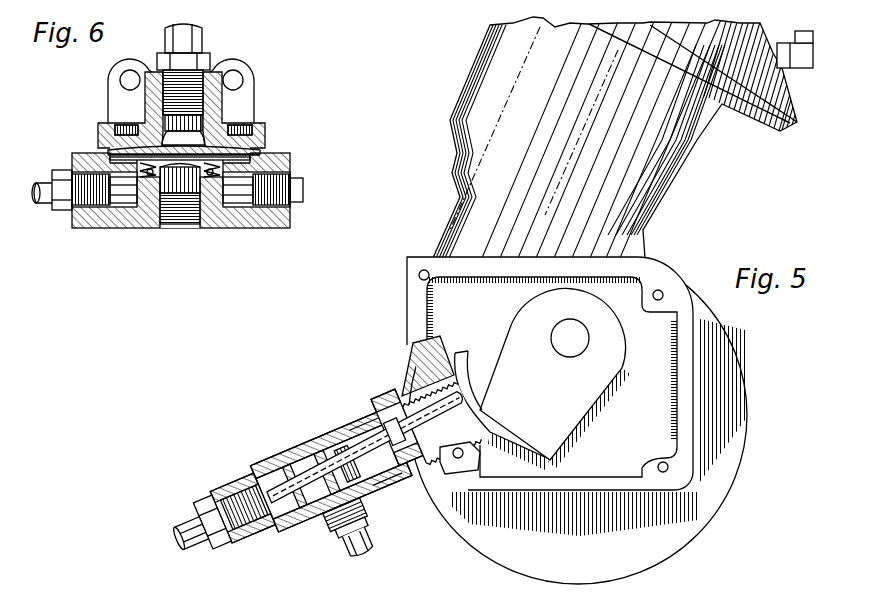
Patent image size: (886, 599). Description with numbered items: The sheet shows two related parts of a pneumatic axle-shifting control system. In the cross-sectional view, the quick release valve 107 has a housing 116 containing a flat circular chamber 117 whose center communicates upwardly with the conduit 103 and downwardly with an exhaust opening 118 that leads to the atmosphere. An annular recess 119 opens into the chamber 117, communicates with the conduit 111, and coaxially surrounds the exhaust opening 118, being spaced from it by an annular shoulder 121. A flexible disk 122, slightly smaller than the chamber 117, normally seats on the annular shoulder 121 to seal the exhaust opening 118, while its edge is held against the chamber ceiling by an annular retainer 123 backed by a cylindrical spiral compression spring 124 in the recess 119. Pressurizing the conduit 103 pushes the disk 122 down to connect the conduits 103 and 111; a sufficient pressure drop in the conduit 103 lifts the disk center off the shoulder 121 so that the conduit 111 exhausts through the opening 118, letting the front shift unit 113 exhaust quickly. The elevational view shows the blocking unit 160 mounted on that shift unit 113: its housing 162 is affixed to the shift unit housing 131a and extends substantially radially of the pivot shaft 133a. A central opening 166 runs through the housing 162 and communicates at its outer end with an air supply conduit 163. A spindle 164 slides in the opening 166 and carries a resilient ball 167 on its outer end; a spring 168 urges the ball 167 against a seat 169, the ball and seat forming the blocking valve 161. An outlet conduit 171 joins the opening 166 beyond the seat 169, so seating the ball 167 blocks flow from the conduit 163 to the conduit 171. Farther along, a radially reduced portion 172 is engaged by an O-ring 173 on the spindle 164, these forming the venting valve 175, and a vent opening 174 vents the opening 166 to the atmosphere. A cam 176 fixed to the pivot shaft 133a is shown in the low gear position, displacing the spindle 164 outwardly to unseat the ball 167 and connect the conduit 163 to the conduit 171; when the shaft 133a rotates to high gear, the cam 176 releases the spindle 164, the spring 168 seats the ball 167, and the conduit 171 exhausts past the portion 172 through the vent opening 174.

In FIG. 6, the conduit 103 is at (203, 52).
In FIG. 6, the quick release valve 107 is at (102, 246).
In FIG. 6, the conduit 111 is at (48, 212).
In FIG. 6, the housing 116 is at (248, 218).
In FIG. 6, the flat circular chamber 117 is at (215, 147).
In FIG. 6, the exhaust opening 118 is at (184, 226).
In FIG. 6, the annular recess 119 is at (138, 210).
In FIG. 6, the annular shoulder 121 is at (146, 198).
In FIG. 6, the flexible disk 122 is at (253, 155).
In FIG. 6, the annular retainer 123 is at (250, 172).
In FIG. 6, the cylindrical spiral compression spring 124 is at (209, 220).
In FIG. 5, the front shift unit 113 is at (700, 237).
In FIG. 5, the shift unit housing 131a is at (407, 315).
In FIG. 5, the pivot shaft 133a is at (580, 337).
In FIG. 5, the cam 176 is at (568, 412).
In FIG. 5, the blocking unit 160 is at (238, 421).
In FIG. 5, the blocking valve 161 is at (185, 479).
In FIG. 5, the housing 162 is at (282, 452).
In FIG. 5, the air supply conduit 163 is at (202, 528).
In FIG. 5, the spindle 164 is at (338, 440).
In FIG. 5, the central opening 166 is at (387, 468).
In FIG. 5, the resilient ball 167 is at (298, 513).
In FIG. 5, the spring 168 is at (252, 468).
In FIG. 5, the seat 169 is at (293, 463).
In FIG. 5, the outlet conduit 171 is at (370, 537).
In FIG. 5, the radially reduced portion 172 is at (315, 437).
In FIG. 5, the O-ring 173 is at (337, 450).
In FIG. 5, the vent opening 174 is at (382, 403).
In FIG. 5, the venting valve 175 is at (370, 487).